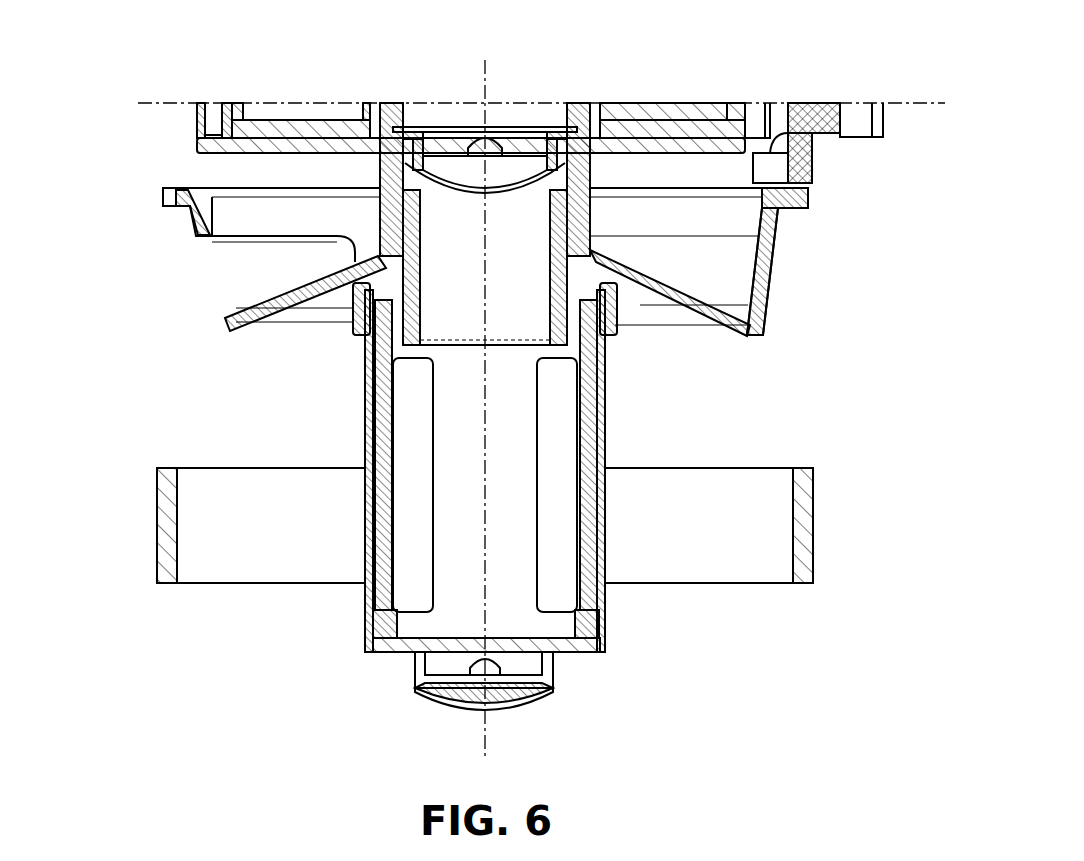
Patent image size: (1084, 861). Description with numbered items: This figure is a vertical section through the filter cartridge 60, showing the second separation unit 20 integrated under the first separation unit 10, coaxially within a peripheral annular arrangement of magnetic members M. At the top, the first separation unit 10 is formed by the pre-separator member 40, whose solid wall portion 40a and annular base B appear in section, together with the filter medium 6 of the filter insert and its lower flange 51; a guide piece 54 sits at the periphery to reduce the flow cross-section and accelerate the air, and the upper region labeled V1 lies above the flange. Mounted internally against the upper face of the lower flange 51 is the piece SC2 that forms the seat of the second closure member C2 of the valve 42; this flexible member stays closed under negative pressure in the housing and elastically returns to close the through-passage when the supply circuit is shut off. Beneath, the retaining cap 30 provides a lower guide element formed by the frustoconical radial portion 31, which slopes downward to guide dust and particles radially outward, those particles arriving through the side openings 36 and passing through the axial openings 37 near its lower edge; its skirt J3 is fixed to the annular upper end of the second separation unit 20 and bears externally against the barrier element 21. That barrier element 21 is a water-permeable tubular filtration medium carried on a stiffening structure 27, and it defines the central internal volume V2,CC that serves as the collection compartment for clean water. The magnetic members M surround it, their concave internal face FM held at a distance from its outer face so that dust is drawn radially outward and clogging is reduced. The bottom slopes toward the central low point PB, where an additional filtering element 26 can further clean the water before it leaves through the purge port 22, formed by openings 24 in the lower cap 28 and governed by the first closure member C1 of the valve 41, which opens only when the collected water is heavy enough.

The filter cartridge 60 is at (85, 92).
The pre-separator member 40 is at (218, 108).
The filter medium 6 is at (293, 118).
The wall portion 40a is at (385, 190).
The seat piece SC2 is at (420, 135).
The valve 42 is at (456, 138).
The first valve V1 is at (548, 108).
The second closure member C2 is at (596, 142).
The guide piece 54 is at (822, 108).
The first separation unit 10 is at (882, 92).
The lower flange 51 is at (245, 128).
The annular base B is at (760, 150).
The side openings 36 is at (245, 238).
The axial openings 37 is at (275, 298).
The retaining cap 30 is at (785, 250).
The radial portion 31 is at (700, 303).
The skirt J3 is at (360, 322).
The second separation unit 20 is at (620, 413).
The stiffening structure 27 is at (537, 453).
The central low point PB is at (444, 680).
The internal face FM is at (252, 572).
The magnetic members M is at (203, 595).
The barrier element 21 is at (370, 604).
The first closure member C1 is at (437, 696).
The purge port 22 is at (443, 705).
The central internal volume / collection compartment V2,CC is at (518, 583).
The additional filtering element 26 is at (580, 638).
The lower cap 28 is at (560, 661).
The openings 24 is at (545, 695).
The valve 41 is at (537, 710).